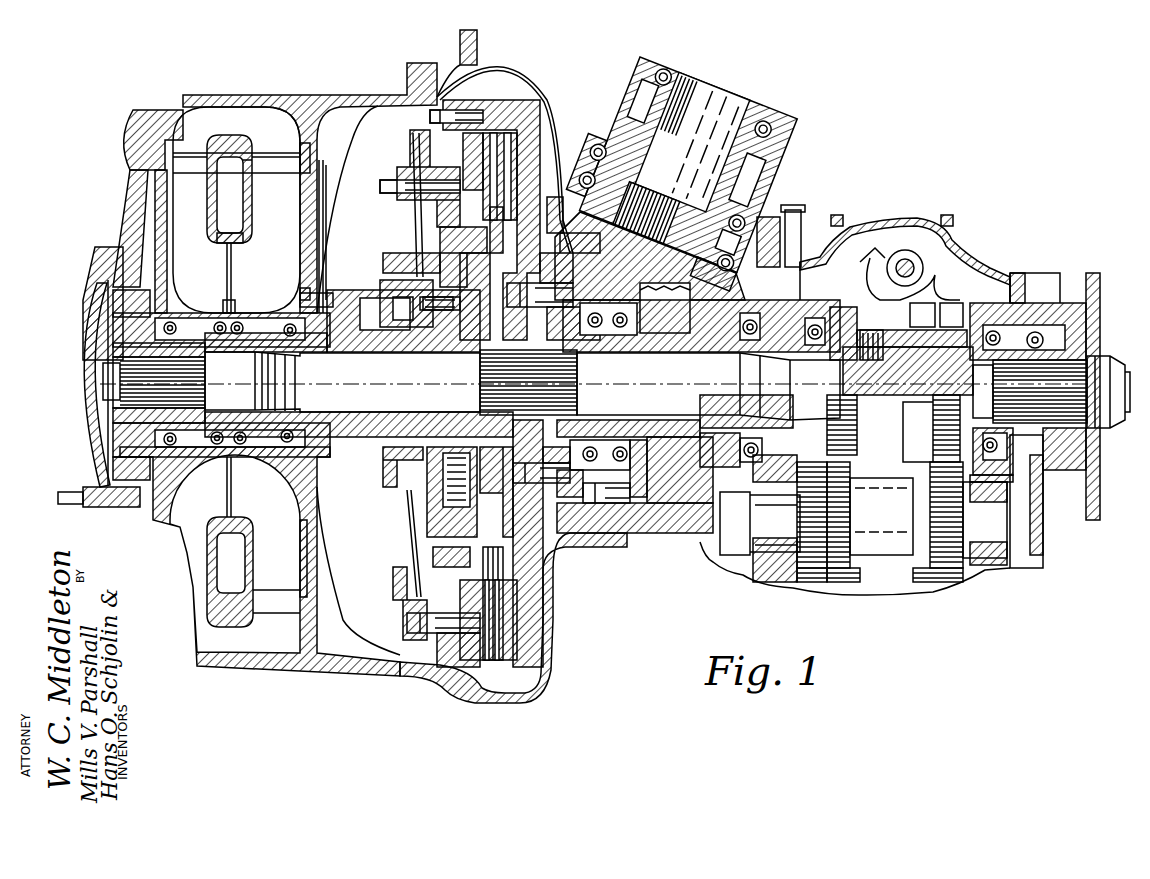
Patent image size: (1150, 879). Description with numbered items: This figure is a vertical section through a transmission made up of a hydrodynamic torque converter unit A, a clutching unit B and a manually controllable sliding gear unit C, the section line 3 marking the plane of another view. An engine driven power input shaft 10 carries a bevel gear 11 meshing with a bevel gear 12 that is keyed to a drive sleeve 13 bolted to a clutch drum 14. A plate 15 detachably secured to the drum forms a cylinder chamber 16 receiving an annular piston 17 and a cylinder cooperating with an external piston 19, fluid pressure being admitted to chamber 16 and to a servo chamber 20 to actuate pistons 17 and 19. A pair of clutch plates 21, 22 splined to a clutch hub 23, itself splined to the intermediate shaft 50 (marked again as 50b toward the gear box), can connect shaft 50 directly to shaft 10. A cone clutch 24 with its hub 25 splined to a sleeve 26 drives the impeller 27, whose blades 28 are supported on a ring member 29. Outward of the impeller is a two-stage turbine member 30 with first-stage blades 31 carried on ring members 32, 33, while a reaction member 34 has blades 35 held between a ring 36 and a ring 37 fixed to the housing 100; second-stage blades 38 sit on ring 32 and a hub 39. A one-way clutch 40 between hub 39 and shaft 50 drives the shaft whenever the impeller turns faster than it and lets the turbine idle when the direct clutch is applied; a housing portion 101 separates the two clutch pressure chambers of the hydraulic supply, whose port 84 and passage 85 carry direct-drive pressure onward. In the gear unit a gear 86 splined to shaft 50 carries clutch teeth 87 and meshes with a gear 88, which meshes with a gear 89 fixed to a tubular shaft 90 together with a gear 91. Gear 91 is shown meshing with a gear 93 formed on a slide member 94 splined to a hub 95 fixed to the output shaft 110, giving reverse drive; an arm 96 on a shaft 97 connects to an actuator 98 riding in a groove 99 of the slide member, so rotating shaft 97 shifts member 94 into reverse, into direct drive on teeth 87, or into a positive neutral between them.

The hydrodynamic torque converter unit A is at (216, 99).
The clutching unit B is at (508, 98).
The slidable gear unit C is at (933, 232).
The section line 3- 3 is at (915, 200).
The power input shaft 10 is at (752, 112).
The bevel gear 11 is at (548, 212).
The bevel gear 12 is at (718, 492).
The drive sleeve 13 is at (668, 445).
The clutch drum 14 is at (500, 98).
The plate 15 is at (460, 62).
The cylinder chamber 16 is at (408, 260).
The annular piston 17 is at (412, 234).
The external piston 19 is at (420, 300).
The servo chamber 20 is at (400, 306).
The clutch plate 21 is at (455, 640).
The clutch plate 22 is at (496, 665).
The clutch hub 23 is at (548, 247).
The cone clutch 24 is at (408, 534).
The hub 25 is at (473, 413).
The sleeve 26 is at (420, 360).
The impeller 27 is at (321, 242).
The blades 28 is at (229, 255).
The ring member 29 is at (250, 232).
The two stage turbine member 30 is at (284, 150).
The blades 31 is at (308, 163).
The ring member 32 is at (252, 175).
The ring member 33 is at (328, 168).
The reaction member 34 is at (190, 150).
The blades 35 is at (187, 170).
The ring 36 is at (236, 143).
The ring 37 is at (140, 172).
The blades 38 is at (236, 305).
The hub 39 is at (180, 303).
The one-way clutch 40 is at (115, 325).
The intermediate shaft 50 is at (103, 380).
The bearing 50b is at (640, 440).
The port 84 is at (390, 462).
The passage 85 is at (360, 482).
The gear 86 is at (838, 248).
The clutch teeth 87 is at (866, 300).
The gear 88 is at (852, 572).
The gear 89 is at (815, 570).
The tubular shaft 90 is at (902, 535).
The gear 91 is at (972, 565).
The gear 93 is at (1030, 330).
The slide member 94 is at (961, 300).
The hub 95 is at (905, 320).
The arm 96 is at (873, 252).
The shaft 97 is at (906, 258).
The actuator 98 is at (925, 575).
The groove 99 is at (930, 300).
The housing 100 is at (130, 142).
The housing portion 101 is at (335, 279).
The output shaft 110 is at (1098, 425).